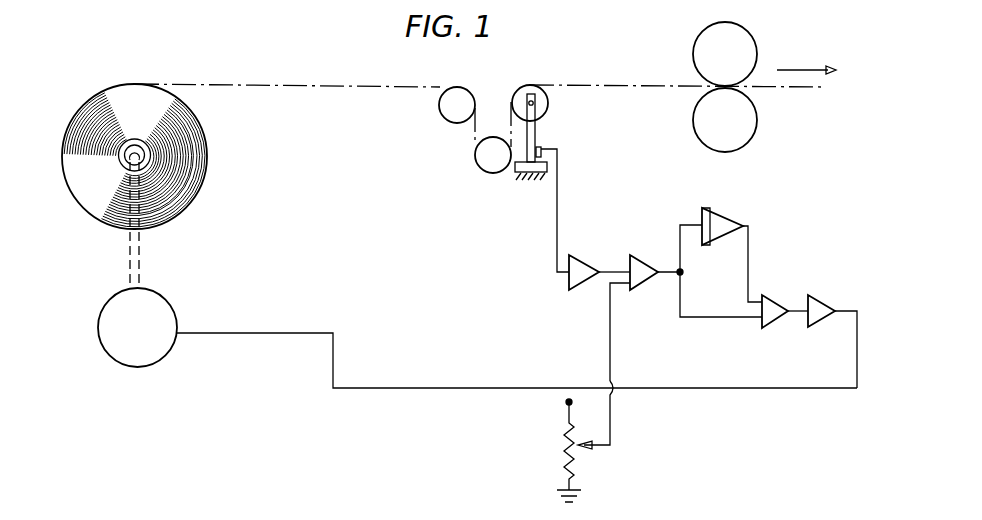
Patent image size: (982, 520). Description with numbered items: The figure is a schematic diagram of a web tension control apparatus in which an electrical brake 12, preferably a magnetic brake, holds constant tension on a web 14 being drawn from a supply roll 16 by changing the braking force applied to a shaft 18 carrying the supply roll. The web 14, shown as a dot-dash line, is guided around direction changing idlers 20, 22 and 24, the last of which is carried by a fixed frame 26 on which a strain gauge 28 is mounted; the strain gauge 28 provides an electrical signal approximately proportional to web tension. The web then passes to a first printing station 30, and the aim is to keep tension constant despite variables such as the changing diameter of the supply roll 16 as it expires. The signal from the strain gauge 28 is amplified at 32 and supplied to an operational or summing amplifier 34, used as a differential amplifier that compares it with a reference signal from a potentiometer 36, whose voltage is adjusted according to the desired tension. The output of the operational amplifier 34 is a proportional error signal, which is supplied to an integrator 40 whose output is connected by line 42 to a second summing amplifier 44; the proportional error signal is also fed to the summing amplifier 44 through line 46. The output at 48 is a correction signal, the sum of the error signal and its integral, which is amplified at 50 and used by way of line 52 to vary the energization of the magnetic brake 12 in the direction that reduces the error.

The electrical brake 12 is at (170, 306).
The web 14 is at (621, 86).
The supply roll 16 is at (203, 185).
The shaft 18 is at (142, 256).
The direction changing idler 20 is at (449, 121).
The direction changing idler 22 is at (489, 166).
The direction changing idler 24 is at (549, 104).
The fixed frame 26 is at (537, 132).
The strain gauge 28 is at (545, 148).
The first printing station 30 is at (755, 44).
The amplifier 32 is at (590, 245).
The operational or summing amplifier 34 is at (645, 244).
The potentiometer 36 is at (565, 455).
The integrator 40 is at (736, 205).
The line 42 is at (748, 266).
The second operational or summing amplifier 44 is at (783, 289).
The line 46 is at (710, 318).
The output of summing amplifier 48 is at (795, 314).
The amplifier 50 is at (831, 289).
The line 52 is at (430, 385).